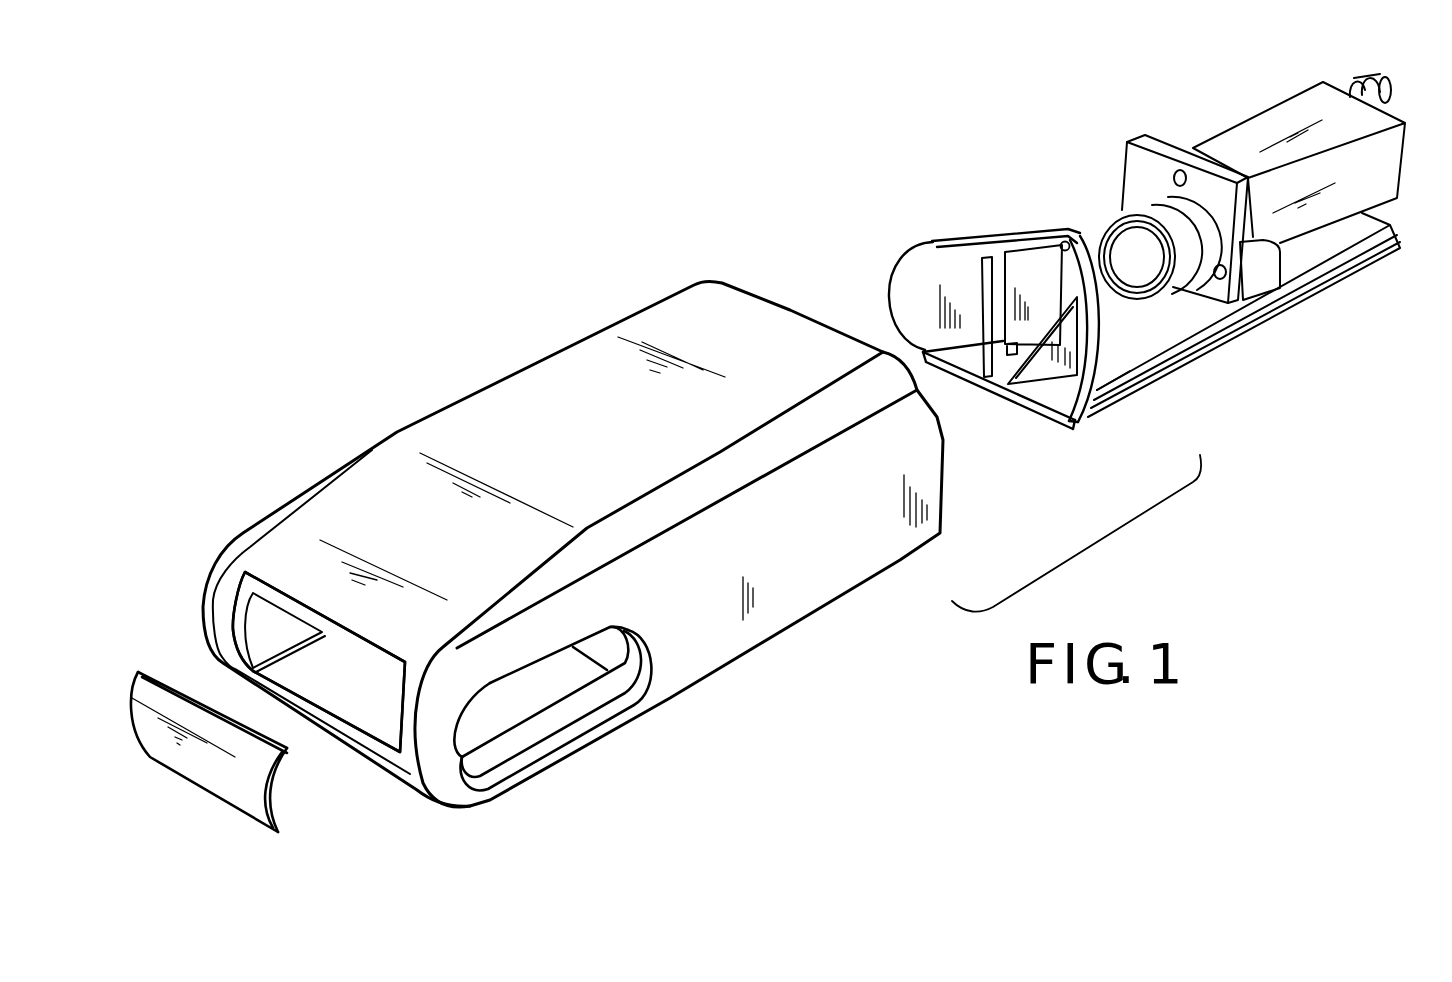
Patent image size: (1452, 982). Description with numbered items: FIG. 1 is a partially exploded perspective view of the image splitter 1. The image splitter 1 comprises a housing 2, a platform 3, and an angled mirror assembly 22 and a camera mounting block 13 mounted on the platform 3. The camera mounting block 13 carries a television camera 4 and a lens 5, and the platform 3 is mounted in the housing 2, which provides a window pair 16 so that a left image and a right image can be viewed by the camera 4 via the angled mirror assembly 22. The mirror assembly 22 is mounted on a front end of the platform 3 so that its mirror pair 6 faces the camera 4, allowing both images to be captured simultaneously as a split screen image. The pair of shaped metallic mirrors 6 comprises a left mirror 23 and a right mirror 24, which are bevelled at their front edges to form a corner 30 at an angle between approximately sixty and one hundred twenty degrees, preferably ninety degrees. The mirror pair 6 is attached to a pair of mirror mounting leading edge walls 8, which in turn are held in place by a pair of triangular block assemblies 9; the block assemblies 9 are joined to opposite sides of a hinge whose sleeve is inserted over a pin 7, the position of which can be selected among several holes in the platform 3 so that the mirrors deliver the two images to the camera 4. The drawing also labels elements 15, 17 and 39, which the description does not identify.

The image splitter 1 is at (952, 482).
The housing 2 is at (827, 608).
The platform 3 is at (1366, 262).
The television camera 4 is at (1262, 142).
The lens 5 is at (1150, 265).
The mirror pair 6 is at (1063, 240).
The pin 7 is at (1062, 242).
The mirror mounting leading edge walls 8 is at (952, 272).
The triangular block assemblies 9 is at (1050, 383).
The camera mounting block 13 is at (1243, 246).
The lens mounting plate 15 is at (1175, 176).
The window pair 16 is at (568, 722).
The end opening 17 is at (358, 695).
The angled mirror assembly 22 is at (1079, 426).
The left mirror 23 is at (1090, 368).
The right mirror 24 is at (906, 260).
The corner 30 is at (1084, 228).
The window cover 39 is at (234, 783).